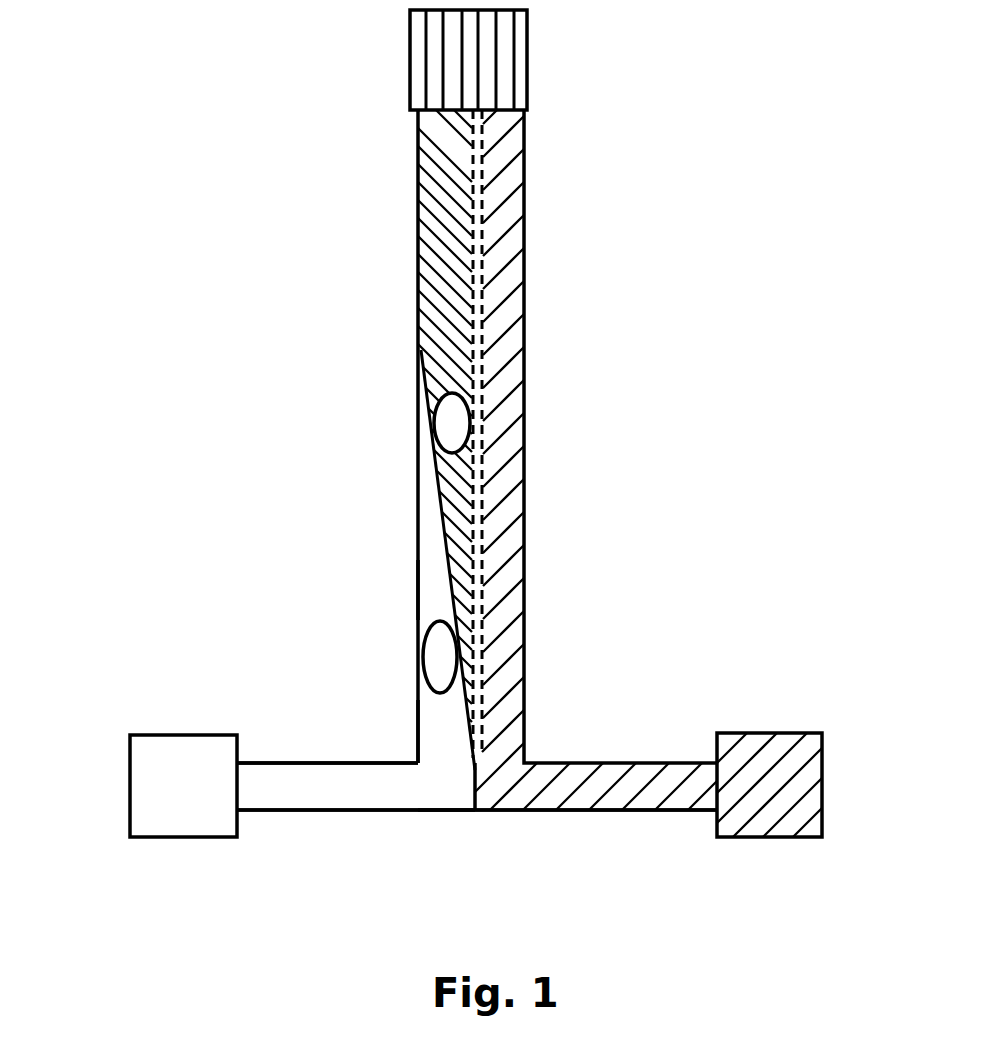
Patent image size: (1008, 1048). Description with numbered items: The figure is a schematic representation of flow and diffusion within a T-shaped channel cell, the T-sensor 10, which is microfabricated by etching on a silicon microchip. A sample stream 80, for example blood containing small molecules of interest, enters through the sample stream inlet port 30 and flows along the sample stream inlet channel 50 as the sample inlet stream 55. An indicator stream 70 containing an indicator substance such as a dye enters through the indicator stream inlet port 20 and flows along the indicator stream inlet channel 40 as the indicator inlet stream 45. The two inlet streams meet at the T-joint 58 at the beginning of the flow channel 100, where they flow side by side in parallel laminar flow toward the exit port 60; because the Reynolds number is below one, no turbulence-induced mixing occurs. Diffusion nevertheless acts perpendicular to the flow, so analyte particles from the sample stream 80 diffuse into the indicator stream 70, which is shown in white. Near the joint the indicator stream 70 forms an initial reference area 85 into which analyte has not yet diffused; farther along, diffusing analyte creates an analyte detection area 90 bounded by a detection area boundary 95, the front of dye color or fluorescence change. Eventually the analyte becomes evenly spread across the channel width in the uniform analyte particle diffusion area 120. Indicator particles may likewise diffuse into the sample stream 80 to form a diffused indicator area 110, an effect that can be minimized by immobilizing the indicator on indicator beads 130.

The T-sensor 10 is at (655, 512).
The indicator stream inlet port 20 is at (152, 778).
The sample stream inlet port 30 is at (807, 778).
The indicator stream inlet channel 40 is at (337, 812).
The indicator inlet stream 45 is at (435, 790).
The sample stream inlet channel 50 is at (655, 812).
The sample inlet stream 55 is at (580, 798).
The T-joint 58 is at (458, 770).
The exit port 60 is at (508, 57).
The indicator stream 70 is at (438, 592).
The sample stream 80 is at (503, 300).
The reference area 85 is at (440, 723).
The analyte detection area 90 is at (430, 289).
The detection area boundary 95 is at (422, 372).
The flow channel 100 is at (345, 513).
The diffused indicator area 110 is at (505, 190).
The uniform analyte particle diffusion area 120 is at (430, 164).
The indicator beads 130 is at (445, 430).